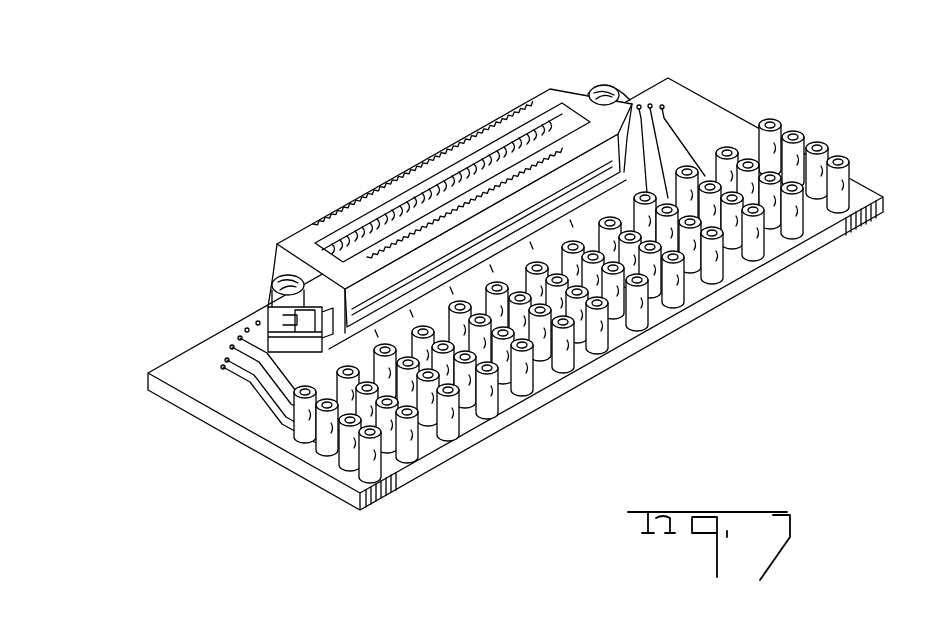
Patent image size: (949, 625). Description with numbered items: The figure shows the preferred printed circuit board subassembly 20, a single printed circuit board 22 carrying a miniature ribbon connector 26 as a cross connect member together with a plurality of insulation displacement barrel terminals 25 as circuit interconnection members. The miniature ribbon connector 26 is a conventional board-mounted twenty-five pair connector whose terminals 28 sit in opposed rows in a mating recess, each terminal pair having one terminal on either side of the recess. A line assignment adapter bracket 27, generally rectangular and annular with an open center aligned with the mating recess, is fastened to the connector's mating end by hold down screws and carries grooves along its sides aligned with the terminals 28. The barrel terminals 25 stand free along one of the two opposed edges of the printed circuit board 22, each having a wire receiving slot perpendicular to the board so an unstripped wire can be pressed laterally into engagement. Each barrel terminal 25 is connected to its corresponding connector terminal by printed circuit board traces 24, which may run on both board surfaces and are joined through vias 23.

The printed circuit board subassembly 20 is at (398, 88).
The printed circuit board 22 is at (185, 370).
The vias 23 is at (258, 323).
The printed circuit board traces 24 is at (263, 392).
The barrel terminals 25 is at (450, 423).
The miniature ribbon connector 26 is at (630, 165).
The line assignment adapter bracket 27 is at (550, 90).
The terminals 28 is at (417, 217).